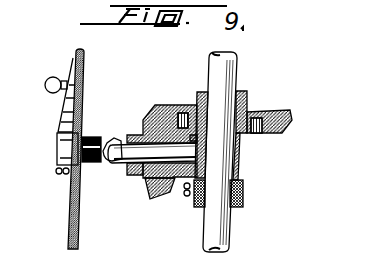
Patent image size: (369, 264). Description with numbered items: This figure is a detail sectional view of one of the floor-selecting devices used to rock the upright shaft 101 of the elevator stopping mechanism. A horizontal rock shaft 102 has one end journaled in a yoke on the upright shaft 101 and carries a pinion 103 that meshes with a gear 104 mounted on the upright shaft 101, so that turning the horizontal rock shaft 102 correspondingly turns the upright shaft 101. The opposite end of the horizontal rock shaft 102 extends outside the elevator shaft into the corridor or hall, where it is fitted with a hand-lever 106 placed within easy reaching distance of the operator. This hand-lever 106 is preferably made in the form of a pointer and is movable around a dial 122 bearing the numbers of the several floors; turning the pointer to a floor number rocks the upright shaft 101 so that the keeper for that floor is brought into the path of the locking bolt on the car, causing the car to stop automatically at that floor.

The upright shaft 101 is at (228, 239).
The horizontal rock shaft 102 is at (107, 143).
The pinion 103 is at (147, 193).
The gear 104 is at (292, 116).
The hand-lever 106 is at (63, 98).
The dial 122 is at (68, 219).